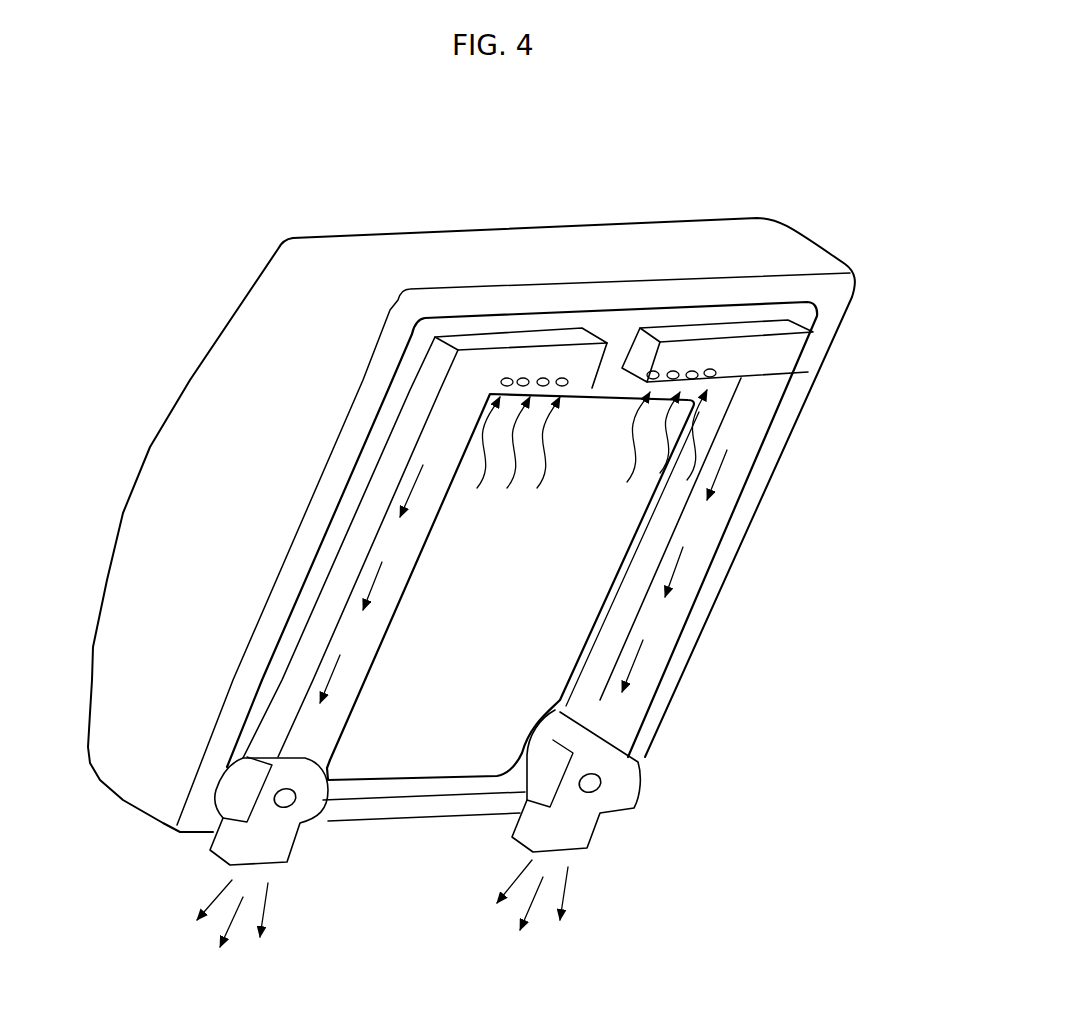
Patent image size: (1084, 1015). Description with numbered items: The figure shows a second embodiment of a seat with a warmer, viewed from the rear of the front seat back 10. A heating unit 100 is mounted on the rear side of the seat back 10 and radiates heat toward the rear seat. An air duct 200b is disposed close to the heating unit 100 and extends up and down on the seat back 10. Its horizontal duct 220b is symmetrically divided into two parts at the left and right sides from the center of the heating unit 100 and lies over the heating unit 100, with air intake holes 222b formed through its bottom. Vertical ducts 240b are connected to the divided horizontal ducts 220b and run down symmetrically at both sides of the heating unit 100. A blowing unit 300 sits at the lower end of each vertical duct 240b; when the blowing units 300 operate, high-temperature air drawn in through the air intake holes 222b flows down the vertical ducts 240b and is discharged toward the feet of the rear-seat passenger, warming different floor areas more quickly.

The front seat back 10 is at (550, 250).
The heating unit 100 is at (420, 748).
The air duct 200b is at (410, 348).
The horizontal duct 220b is at (710, 347).
The air intake holes 222b is at (713, 371).
The vertical ducts 240b is at (707, 527).
The blowing unit 300 is at (290, 828).